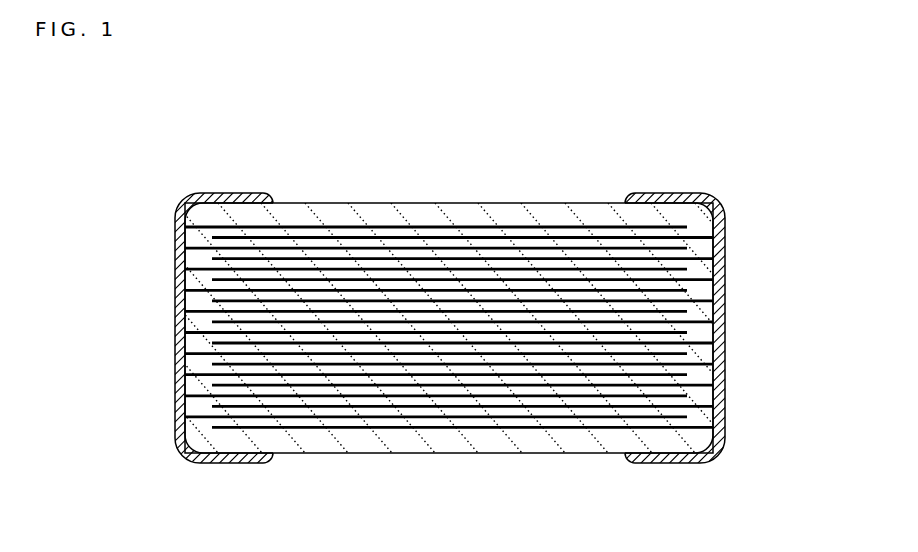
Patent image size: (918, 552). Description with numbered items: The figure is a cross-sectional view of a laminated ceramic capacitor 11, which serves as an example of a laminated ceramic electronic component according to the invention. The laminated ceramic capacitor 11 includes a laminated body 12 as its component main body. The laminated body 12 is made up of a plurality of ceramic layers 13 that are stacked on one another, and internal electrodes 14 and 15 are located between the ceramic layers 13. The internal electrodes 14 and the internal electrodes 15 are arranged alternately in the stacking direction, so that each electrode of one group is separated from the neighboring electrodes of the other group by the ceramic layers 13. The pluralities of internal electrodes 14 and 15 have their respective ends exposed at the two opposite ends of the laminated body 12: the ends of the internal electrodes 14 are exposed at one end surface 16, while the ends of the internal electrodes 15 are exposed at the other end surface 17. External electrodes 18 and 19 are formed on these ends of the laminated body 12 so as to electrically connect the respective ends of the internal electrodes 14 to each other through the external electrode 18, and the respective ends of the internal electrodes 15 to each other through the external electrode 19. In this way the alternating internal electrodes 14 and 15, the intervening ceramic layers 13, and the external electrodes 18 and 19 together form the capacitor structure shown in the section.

The laminated ceramic capacitor 11 is at (244, 139).
The laminated body 12 is at (559, 196).
The ceramic layers 13 is at (359, 412).
The internal electrodes 14 is at (387, 249).
The internal electrodes 15 is at (540, 410).
The end surface 16 is at (182, 323).
The end surface 17 is at (725, 293).
The external electrode 18 is at (178, 382).
The external electrode 19 is at (725, 359).